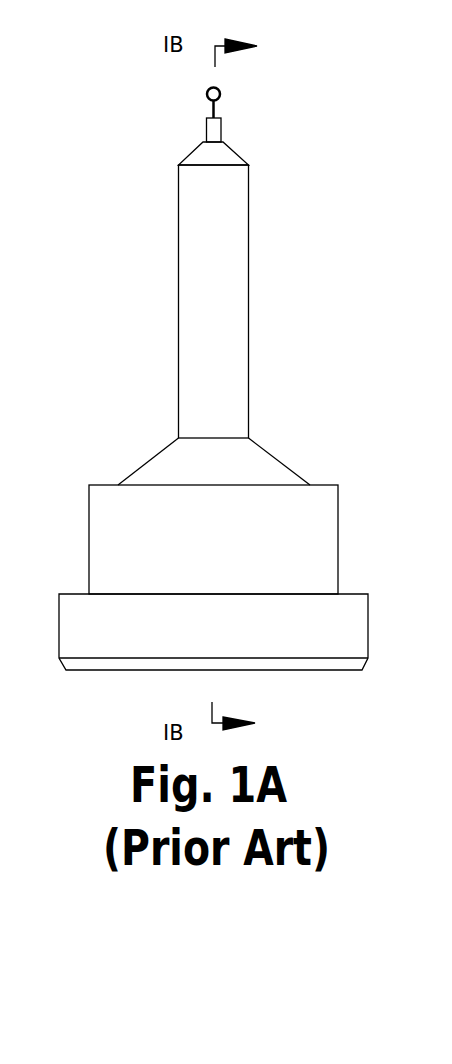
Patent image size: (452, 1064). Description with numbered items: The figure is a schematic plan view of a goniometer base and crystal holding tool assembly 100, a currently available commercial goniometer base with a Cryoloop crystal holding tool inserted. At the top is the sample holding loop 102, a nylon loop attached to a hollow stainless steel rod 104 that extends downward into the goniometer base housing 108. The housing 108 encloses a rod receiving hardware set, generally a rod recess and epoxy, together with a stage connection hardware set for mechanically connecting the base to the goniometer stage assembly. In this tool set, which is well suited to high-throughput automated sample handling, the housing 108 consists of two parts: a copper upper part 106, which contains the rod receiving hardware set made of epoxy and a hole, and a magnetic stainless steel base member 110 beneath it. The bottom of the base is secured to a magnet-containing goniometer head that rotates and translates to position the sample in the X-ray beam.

The goniometer base and crystal holding tool assembly 100 is at (224, 412).
The sample holding loop 102 is at (220, 97).
The rod 104 is at (206, 126).
The copper upper part 106 is at (249, 297).
The goniometer base housing 108 is at (92, 391).
The magnetic stainless steel base member 110 is at (338, 518).